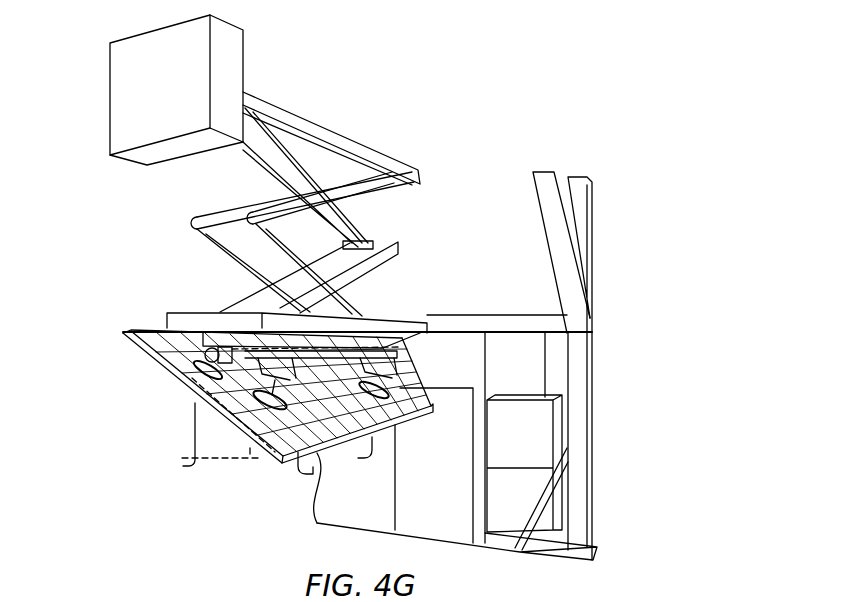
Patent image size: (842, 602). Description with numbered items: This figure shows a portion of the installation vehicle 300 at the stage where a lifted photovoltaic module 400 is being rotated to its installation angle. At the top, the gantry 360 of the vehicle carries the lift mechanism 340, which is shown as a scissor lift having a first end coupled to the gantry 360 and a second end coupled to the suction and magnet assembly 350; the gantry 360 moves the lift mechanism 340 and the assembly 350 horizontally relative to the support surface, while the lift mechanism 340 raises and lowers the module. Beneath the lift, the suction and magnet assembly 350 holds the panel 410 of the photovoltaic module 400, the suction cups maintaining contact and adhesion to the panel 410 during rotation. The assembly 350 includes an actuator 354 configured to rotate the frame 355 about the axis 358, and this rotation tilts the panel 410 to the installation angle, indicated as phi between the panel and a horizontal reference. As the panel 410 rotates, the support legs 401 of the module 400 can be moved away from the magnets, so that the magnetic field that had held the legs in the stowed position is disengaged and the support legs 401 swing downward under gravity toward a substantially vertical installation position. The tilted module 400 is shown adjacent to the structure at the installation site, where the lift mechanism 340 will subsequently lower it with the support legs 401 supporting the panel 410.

The installation vehicle 300 is at (614, 282).
The lift mechanism 340 is at (195, 221).
The suction and magnet assembly 350 is at (177, 312).
The actuator 354 is at (166, 331).
The frame 355 is at (397, 353).
The axis 358 is at (333, 343).
The gantry 360 is at (136, 87).
The photovoltaic module 400 is at (165, 372).
The support legs 401 is at (193, 433).
The panel 410 is at (282, 402).